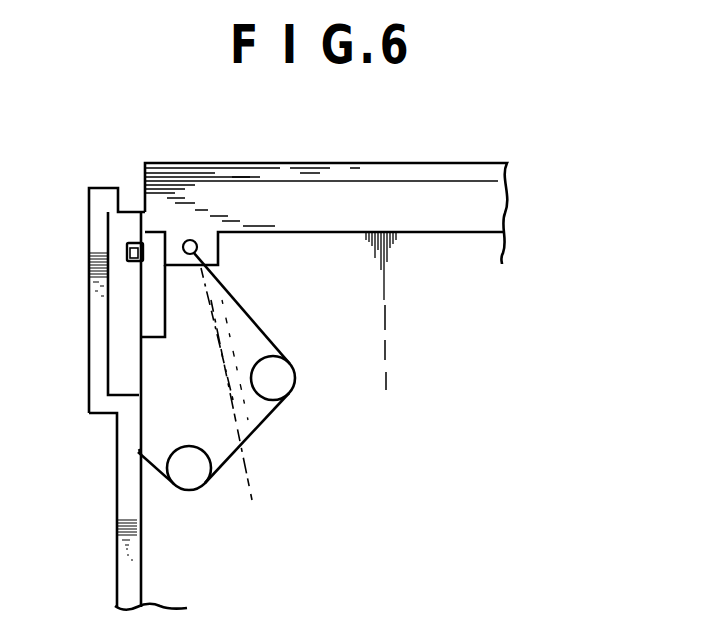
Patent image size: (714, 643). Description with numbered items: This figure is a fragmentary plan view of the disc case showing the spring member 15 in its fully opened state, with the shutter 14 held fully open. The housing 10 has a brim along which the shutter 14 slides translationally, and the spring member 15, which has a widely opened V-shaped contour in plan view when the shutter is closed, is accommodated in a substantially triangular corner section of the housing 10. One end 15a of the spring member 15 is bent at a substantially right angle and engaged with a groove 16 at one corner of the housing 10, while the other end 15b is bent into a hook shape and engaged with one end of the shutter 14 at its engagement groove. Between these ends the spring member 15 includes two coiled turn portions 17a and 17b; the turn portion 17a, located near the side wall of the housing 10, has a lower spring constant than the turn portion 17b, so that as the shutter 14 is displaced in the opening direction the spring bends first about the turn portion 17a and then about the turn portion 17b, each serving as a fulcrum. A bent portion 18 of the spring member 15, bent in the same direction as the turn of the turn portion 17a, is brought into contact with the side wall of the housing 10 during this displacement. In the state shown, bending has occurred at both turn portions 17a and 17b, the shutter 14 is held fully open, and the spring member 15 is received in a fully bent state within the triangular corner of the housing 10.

The housing 10 is at (118, 532).
The shutter 14 is at (343, 195).
The spring member 15 is at (257, 432).
The one end of the spring member 15a is at (133, 251).
The other end of the spring member 15b is at (197, 248).
The groove 16 is at (128, 245).
The turn portion 17a is at (195, 493).
The turn portion 17b is at (296, 380).
The bent portion 18 is at (140, 451).